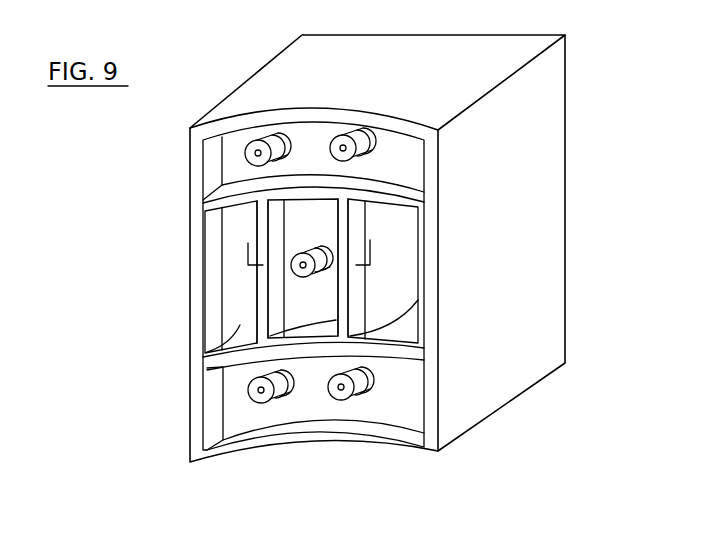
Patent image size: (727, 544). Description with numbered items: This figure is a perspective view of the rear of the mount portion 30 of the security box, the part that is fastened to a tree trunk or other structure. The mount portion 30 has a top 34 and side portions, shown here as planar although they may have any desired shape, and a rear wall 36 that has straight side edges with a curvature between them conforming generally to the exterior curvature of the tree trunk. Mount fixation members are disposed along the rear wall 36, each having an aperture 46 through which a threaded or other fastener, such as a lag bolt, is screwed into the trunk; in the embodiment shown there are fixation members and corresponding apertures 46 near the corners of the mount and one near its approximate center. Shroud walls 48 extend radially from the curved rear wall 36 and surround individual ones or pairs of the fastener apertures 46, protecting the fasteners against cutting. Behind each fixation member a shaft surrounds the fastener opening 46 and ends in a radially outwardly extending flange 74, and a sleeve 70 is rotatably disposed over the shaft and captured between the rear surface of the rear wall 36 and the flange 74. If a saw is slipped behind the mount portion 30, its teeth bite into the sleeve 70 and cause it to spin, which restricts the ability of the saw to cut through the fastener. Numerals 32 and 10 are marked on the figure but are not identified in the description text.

The mount portion 30 is at (621, 134).
The side wall 32 is at (510, 244).
The top 34 is at (372, 88).
The rear wall 36 is at (246, 283).
The gap 10 is at (309, 250).
The aperture 46 is at (257, 150).
The shroud wall 48 is at (281, 122).
The sleeve 70 is at (287, 150).
The flange 74 is at (246, 156).